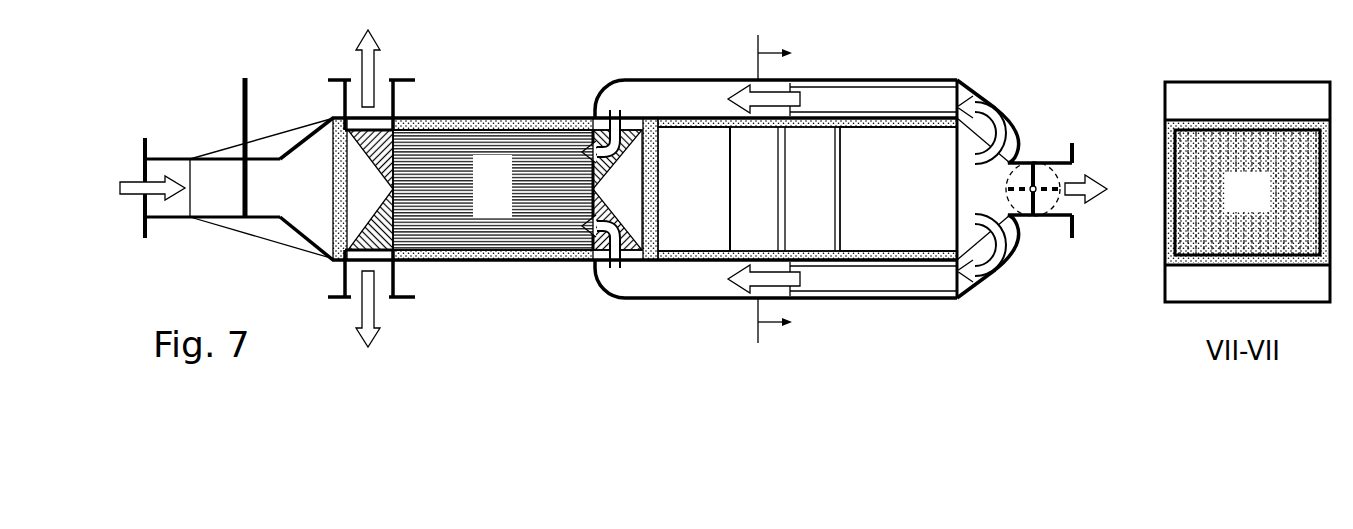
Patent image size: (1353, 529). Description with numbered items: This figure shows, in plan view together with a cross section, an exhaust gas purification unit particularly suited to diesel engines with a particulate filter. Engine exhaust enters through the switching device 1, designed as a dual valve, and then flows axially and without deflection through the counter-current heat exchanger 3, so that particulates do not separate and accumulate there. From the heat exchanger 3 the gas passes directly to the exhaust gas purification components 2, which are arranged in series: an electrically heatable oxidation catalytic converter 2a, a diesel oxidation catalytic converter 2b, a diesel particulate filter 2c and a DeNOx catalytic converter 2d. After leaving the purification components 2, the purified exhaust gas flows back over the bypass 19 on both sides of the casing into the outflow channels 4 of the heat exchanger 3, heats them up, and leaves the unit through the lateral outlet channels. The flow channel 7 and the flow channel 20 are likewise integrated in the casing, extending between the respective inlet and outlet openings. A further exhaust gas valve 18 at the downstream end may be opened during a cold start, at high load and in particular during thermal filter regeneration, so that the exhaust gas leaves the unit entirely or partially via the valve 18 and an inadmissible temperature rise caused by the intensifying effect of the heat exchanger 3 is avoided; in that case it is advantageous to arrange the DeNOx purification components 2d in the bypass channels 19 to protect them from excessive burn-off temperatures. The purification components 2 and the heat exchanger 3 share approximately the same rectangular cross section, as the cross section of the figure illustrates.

The switching device 1 is at (217, 147).
The flow channel 7 is at (262, 189).
The counter-current heat exchanger 3 is at (345, 365).
The outflow channels 4 is at (493, 189).
The exhaust gas purification components 2 is at (953, 365).
The bypass 19 is at (1000, 192).
The flow channel 20 is at (694, 189).
The electrically heatable oxidation catalytic converter 2a is at (1032, 192).
The diesel oxidation catalytic converter 2b is at (815, 189).
The diesel particulate filter 2c is at (898, 189).
The DeNOx catalytic converter 2d is at (873, 191).
The exhaust gas valve 18 is at (1035, 207).